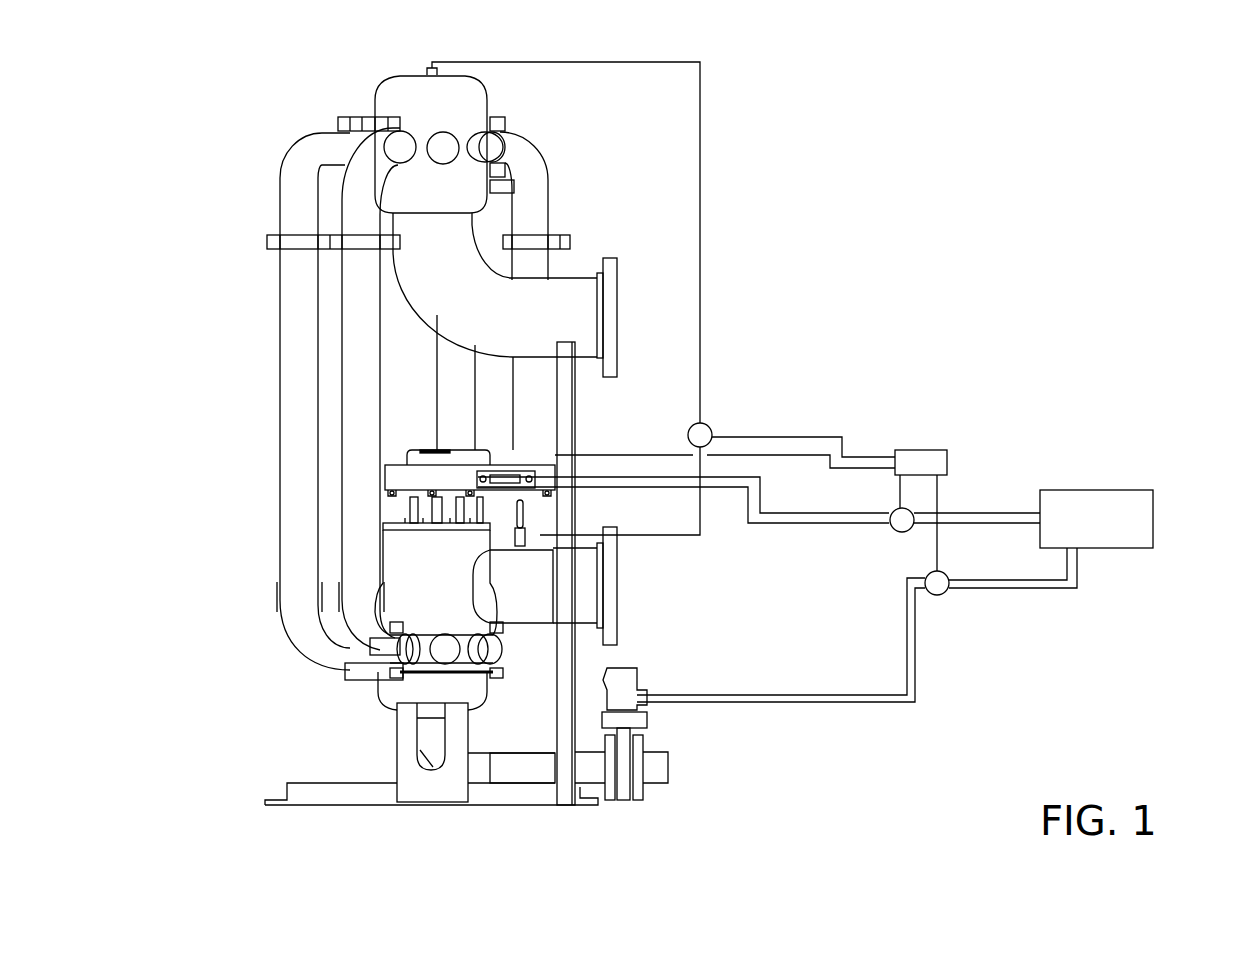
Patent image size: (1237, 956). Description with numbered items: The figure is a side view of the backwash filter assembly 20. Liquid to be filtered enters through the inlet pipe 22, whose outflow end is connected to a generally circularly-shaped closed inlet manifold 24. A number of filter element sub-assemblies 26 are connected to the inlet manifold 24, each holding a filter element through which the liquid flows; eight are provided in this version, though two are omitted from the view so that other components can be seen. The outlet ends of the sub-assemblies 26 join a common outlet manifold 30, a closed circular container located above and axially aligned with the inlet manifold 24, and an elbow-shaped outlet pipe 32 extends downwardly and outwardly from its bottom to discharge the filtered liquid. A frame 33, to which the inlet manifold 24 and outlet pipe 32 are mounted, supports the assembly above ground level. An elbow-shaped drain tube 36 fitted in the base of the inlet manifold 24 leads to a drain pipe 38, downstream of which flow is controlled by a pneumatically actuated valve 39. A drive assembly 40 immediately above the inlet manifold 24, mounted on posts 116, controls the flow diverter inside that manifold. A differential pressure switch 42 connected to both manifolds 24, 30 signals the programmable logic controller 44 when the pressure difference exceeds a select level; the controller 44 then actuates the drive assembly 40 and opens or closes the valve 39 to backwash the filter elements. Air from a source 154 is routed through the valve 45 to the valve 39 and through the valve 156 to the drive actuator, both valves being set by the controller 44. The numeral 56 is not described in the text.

The filter assembly 20 is at (884, 222).
The inlet pipe 22 is at (538, 589).
The inlet manifold 24 is at (450, 557).
The filter element sub-assemblies 26 is at (560, 205).
The outlet manifold 30 is at (450, 113).
The outlet pipe 32 is at (553, 318).
The frame 33 is at (412, 752).
The drain tube 36 is at (437, 740).
The drain pipe 38 is at (548, 778).
The valve 39 is at (621, 734).
The drive assembly 40 is at (398, 446).
The differential pressure switch 42 is at (716, 426).
The programmable logic controller 44 is at (926, 440).
The valve 45 is at (944, 595).
The outlet port 56 is at (477, 643).
The posts 116 is at (415, 510).
The source 154 is at (1133, 497).
The valve 156 is at (892, 530).